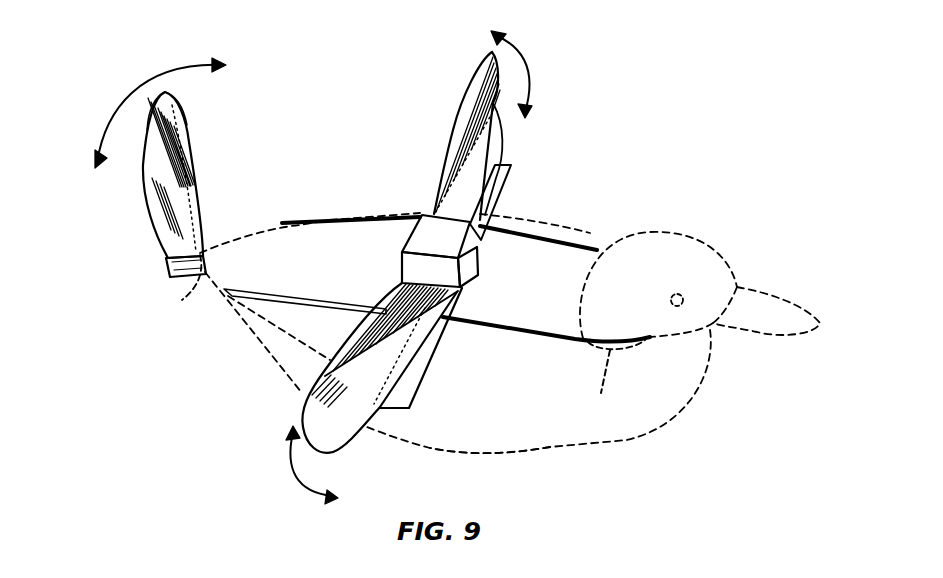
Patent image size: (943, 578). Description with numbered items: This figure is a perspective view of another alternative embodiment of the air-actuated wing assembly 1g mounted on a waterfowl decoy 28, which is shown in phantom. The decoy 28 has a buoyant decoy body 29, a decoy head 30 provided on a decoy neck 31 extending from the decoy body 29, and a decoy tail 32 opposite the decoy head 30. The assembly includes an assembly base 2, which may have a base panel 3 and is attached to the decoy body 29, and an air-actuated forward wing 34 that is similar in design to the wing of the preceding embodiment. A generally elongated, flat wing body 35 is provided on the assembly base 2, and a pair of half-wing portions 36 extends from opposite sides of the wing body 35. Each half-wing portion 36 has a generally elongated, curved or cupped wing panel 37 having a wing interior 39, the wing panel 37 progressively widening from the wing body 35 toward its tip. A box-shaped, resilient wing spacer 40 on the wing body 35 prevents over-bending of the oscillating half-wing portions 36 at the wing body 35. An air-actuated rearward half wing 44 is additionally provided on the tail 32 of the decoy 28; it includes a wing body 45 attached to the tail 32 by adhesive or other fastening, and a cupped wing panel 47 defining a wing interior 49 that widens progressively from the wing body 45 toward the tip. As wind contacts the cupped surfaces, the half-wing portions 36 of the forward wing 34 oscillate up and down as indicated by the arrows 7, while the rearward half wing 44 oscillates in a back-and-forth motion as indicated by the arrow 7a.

The air-actuated wing assembly 1g is at (640, 80).
The assembly base 2 is at (430, 408).
The base panel 3 is at (420, 368).
The arrows 7 is at (526, 60).
The arrow 7a is at (152, 74).
The decoy 28 is at (617, 455).
The decoy body 29 is at (553, 449).
The decoy head 30 is at (685, 266).
The decoy neck 31 is at (588, 378).
The decoy tail 32 is at (182, 302).
The air-actuated forward wing 34 is at (437, 82).
The wing body 35 is at (472, 263).
The half-wing portions 36 is at (440, 127).
The wing panel 37 is at (463, 150).
The wing interior 39 is at (508, 144).
The wing spacer 40 is at (432, 242).
The air-actuated rearward half wing 44 is at (205, 152).
The wing body 45 is at (168, 267).
The wing panel 47 is at (195, 192).
The wing interior 49 is at (188, 116).